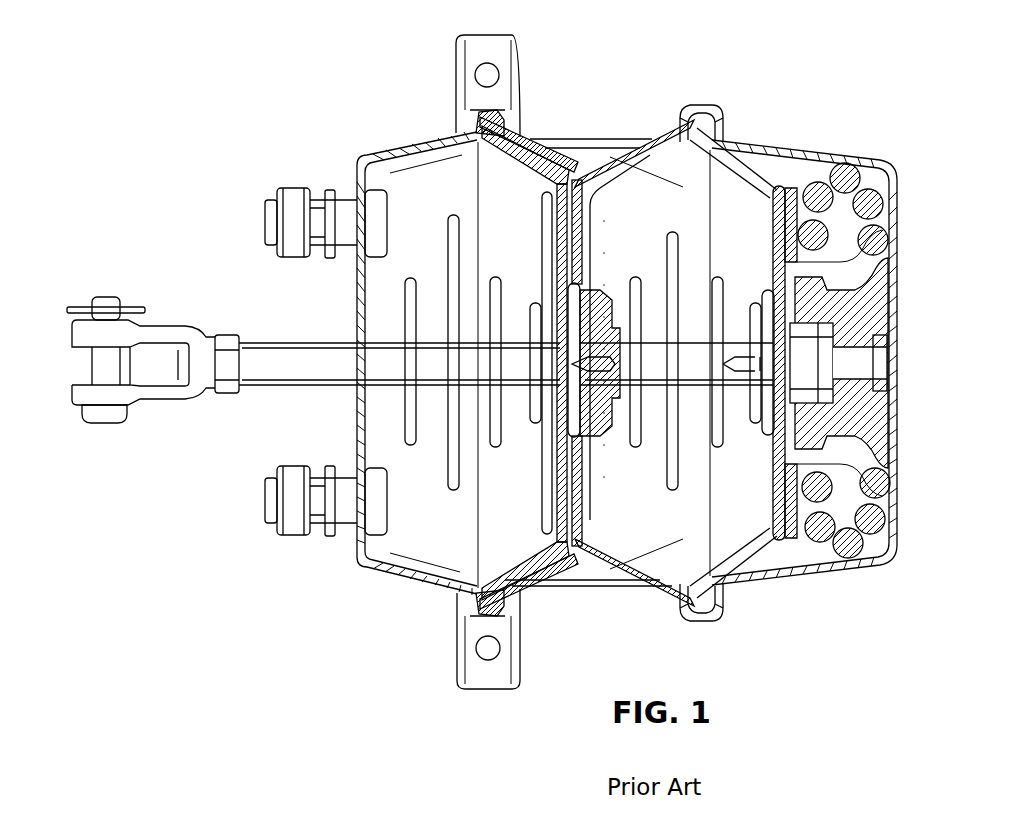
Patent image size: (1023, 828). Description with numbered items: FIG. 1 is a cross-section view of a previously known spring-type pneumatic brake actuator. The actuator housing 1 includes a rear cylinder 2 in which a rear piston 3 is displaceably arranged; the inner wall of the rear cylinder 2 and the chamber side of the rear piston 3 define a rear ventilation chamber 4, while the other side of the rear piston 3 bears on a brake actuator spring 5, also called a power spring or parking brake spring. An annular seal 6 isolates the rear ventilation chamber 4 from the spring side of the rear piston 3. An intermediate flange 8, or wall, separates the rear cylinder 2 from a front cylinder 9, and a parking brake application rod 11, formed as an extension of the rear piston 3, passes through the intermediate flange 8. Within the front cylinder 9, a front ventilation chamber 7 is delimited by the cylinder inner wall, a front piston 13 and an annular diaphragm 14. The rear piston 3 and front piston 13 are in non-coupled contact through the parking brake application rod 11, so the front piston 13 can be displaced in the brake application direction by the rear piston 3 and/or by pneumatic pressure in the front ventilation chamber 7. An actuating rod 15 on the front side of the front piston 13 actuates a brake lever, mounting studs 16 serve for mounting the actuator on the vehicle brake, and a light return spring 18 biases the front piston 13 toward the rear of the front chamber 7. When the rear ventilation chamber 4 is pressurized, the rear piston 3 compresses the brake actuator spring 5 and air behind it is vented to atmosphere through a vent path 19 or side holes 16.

The actuator housing 1 is at (868, 122).
The rear cylinder 2 is at (743, 133).
The rear piston 3 is at (794, 424).
The rear ventilation chamber 4 is at (645, 516).
The brake actuator spring 5 is at (868, 190).
The annular seal 6 is at (740, 578).
The front ventilation chamber 7 is at (518, 121).
The intermediate flange 8 is at (569, 546).
The front cylinder 9 is at (381, 574).
The parking brake application rod 11 is at (657, 347).
The front piston 13 is at (538, 250).
The annular diaphragm 14 is at (483, 596).
The actuating rod 15 is at (283, 342).
The mounting studs 16 is at (776, 137).
The light return spring 18 is at (447, 228).
The vent path 19 is at (848, 360).